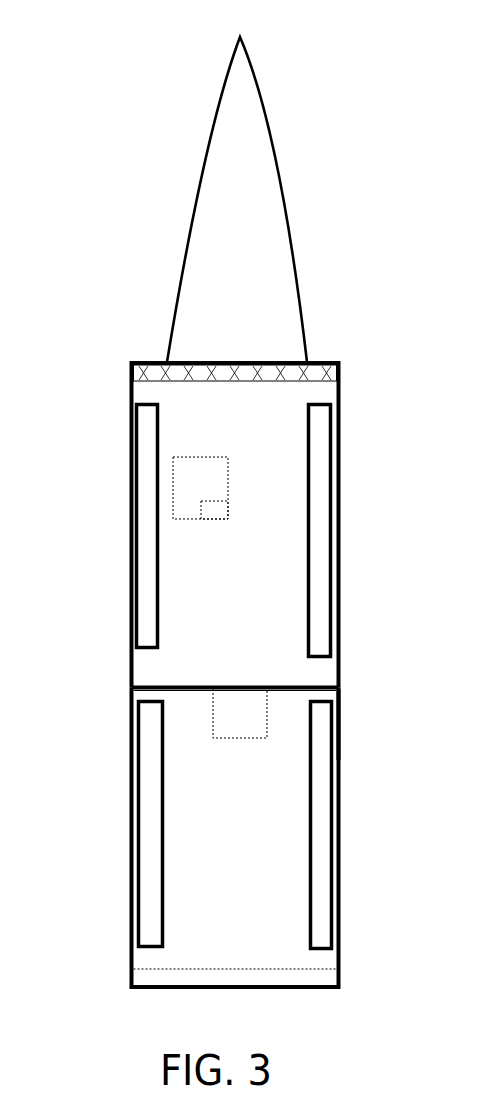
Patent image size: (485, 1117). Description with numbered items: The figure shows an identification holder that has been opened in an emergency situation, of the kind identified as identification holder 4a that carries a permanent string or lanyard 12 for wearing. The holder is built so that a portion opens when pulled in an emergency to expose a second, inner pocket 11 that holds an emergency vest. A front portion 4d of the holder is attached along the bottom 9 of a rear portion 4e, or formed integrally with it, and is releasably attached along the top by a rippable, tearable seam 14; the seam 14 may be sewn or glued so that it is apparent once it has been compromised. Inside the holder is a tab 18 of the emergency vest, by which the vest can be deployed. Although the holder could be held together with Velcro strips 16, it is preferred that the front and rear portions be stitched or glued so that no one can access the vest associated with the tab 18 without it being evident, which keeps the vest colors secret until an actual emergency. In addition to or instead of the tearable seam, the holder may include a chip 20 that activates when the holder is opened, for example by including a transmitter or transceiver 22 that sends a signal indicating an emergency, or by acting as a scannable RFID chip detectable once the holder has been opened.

The lanyard 12 is at (177, 270).
The rippable seam 14 is at (130, 363).
The Velcro strips 16 is at (148, 465).
The rear portion 4e is at (340, 375).
The chip 20 is at (208, 485).
The transmitter 22 is at (218, 513).
The bottom 9 is at (130, 688).
The inner pocket 11 is at (193, 690).
The tab 18 is at (253, 725).
The identification holder 4a is at (340, 702).
The front portion 4d is at (340, 808).